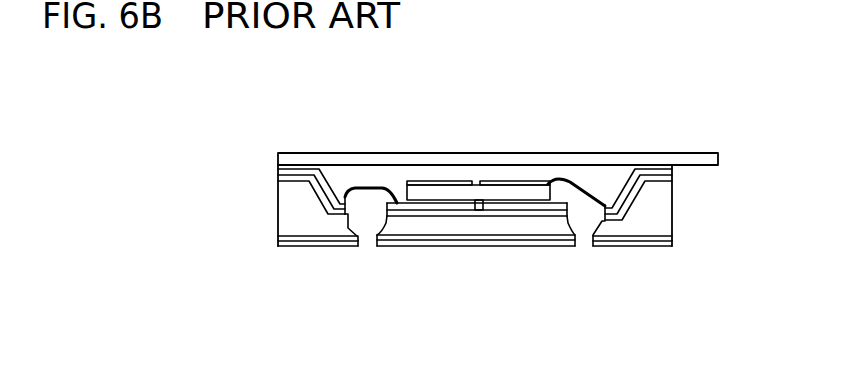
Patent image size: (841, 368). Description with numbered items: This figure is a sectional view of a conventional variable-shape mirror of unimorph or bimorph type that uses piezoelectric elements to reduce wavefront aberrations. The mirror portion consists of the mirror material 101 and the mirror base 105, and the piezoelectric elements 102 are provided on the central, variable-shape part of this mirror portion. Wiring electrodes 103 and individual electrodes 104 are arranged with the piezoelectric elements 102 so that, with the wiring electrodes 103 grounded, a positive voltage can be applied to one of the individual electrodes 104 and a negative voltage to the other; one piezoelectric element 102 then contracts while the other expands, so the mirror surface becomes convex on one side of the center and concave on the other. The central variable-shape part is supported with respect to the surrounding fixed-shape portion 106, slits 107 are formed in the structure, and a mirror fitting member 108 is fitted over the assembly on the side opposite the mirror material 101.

The mirror material 101 is at (522, 241).
The piezoelectric elements 102 is at (535, 193).
The wiring electrodes 103 is at (510, 205).
The individual electrodes 104 is at (513, 182).
The mirror base 105 is at (508, 212).
The fixed-shape portion 106 is at (290, 204).
The slits 107 is at (582, 236).
The mirror fitting member 108 is at (628, 155).